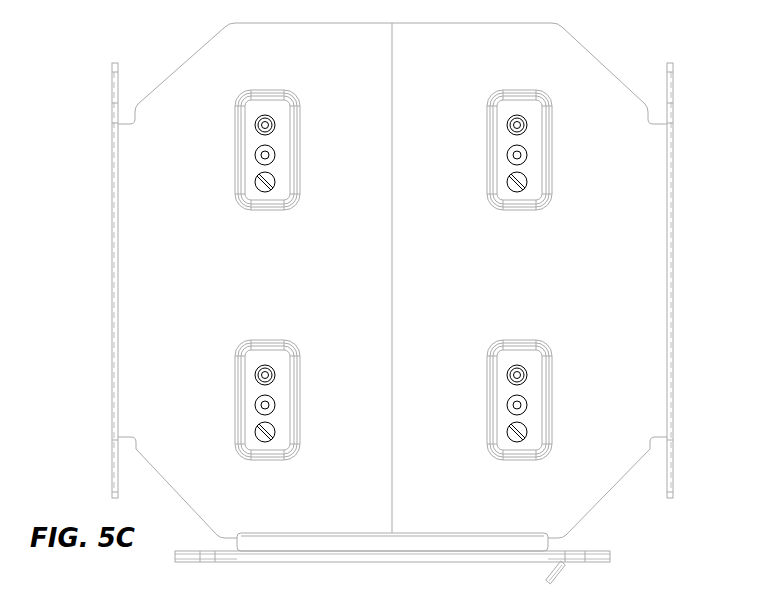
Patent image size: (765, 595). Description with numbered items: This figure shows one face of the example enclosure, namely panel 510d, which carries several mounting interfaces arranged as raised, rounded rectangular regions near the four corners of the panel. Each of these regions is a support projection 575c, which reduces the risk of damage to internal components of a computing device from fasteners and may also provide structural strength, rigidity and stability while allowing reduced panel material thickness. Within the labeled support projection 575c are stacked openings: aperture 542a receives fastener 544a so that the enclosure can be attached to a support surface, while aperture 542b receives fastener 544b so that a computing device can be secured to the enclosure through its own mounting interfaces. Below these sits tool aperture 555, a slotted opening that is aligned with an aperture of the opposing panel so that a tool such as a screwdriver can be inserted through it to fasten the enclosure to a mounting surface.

The panel 510d is at (392, 303).
The aperture 542a is at (270, 121).
The aperture 542b is at (270, 152).
The fastener 544a is at (277, 126).
The fastener 544b is at (277, 156).
The tool aperture 555 is at (263, 186).
The support projection 575c is at (270, 161).